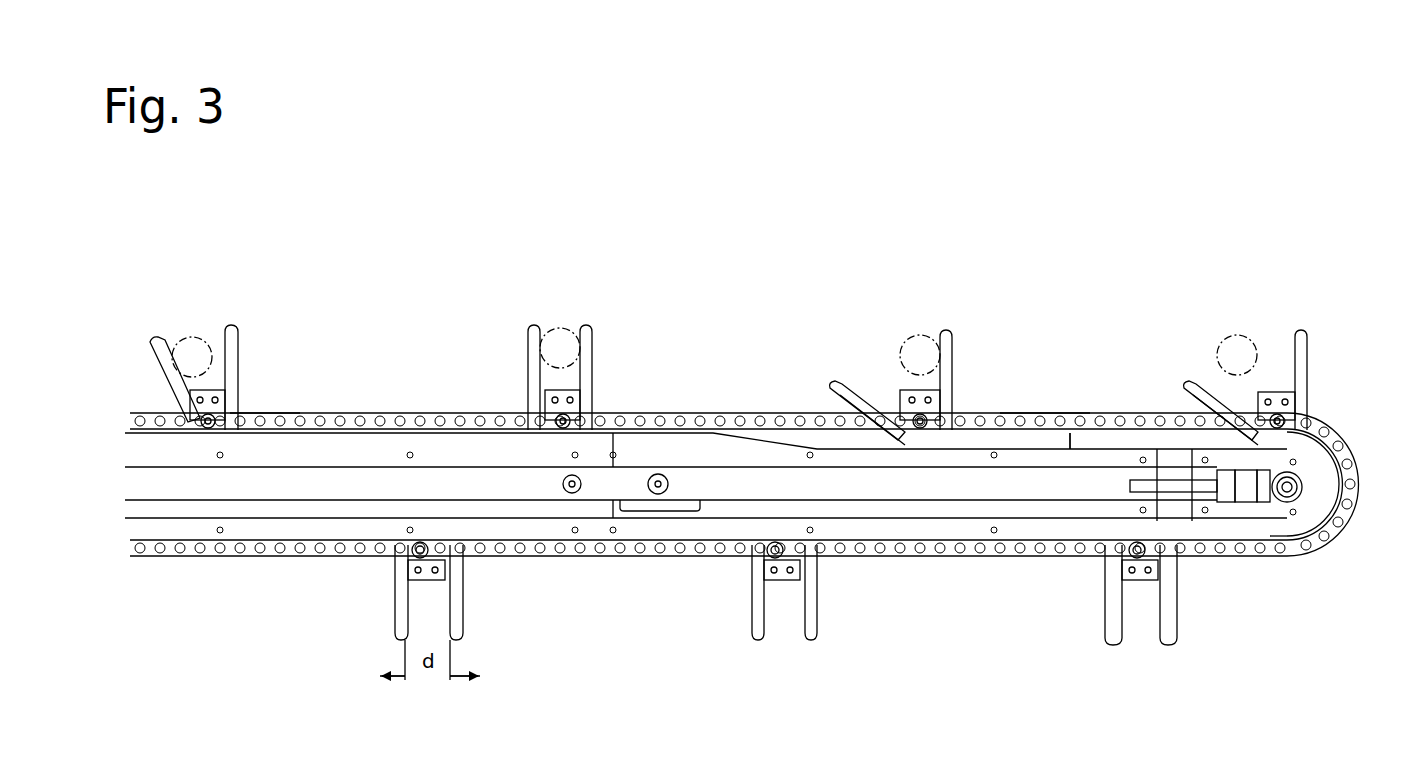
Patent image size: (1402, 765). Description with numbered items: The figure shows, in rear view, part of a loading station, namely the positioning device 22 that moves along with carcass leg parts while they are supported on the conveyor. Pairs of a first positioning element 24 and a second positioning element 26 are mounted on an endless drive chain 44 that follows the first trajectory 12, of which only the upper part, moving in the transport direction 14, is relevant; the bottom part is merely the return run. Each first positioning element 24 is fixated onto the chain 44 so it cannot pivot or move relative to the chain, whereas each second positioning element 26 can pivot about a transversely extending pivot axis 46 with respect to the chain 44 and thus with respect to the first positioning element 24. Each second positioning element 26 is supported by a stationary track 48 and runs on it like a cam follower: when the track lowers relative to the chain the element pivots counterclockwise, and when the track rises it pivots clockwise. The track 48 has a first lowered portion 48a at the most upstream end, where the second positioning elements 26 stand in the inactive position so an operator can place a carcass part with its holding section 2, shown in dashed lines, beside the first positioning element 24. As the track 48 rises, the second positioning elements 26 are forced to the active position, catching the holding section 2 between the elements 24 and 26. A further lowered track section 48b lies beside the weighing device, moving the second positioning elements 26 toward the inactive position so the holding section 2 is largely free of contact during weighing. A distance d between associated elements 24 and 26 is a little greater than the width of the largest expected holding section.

The holding section 2 is at (190, 342).
The first trajectory 12 is at (325, 365).
The transport direction 14 is at (670, 283).
The positioning device 22 is at (1160, 312).
The first positioning element 24 is at (232, 328).
The second positioning element 26 is at (150, 345).
The drive chain 44 is at (943, 555).
The pivot axis 46 is at (208, 424).
The stationary track 48 is at (680, 445).
The first lowered portion 48a is at (1048, 448).
The further lowered track section 48b is at (268, 430).